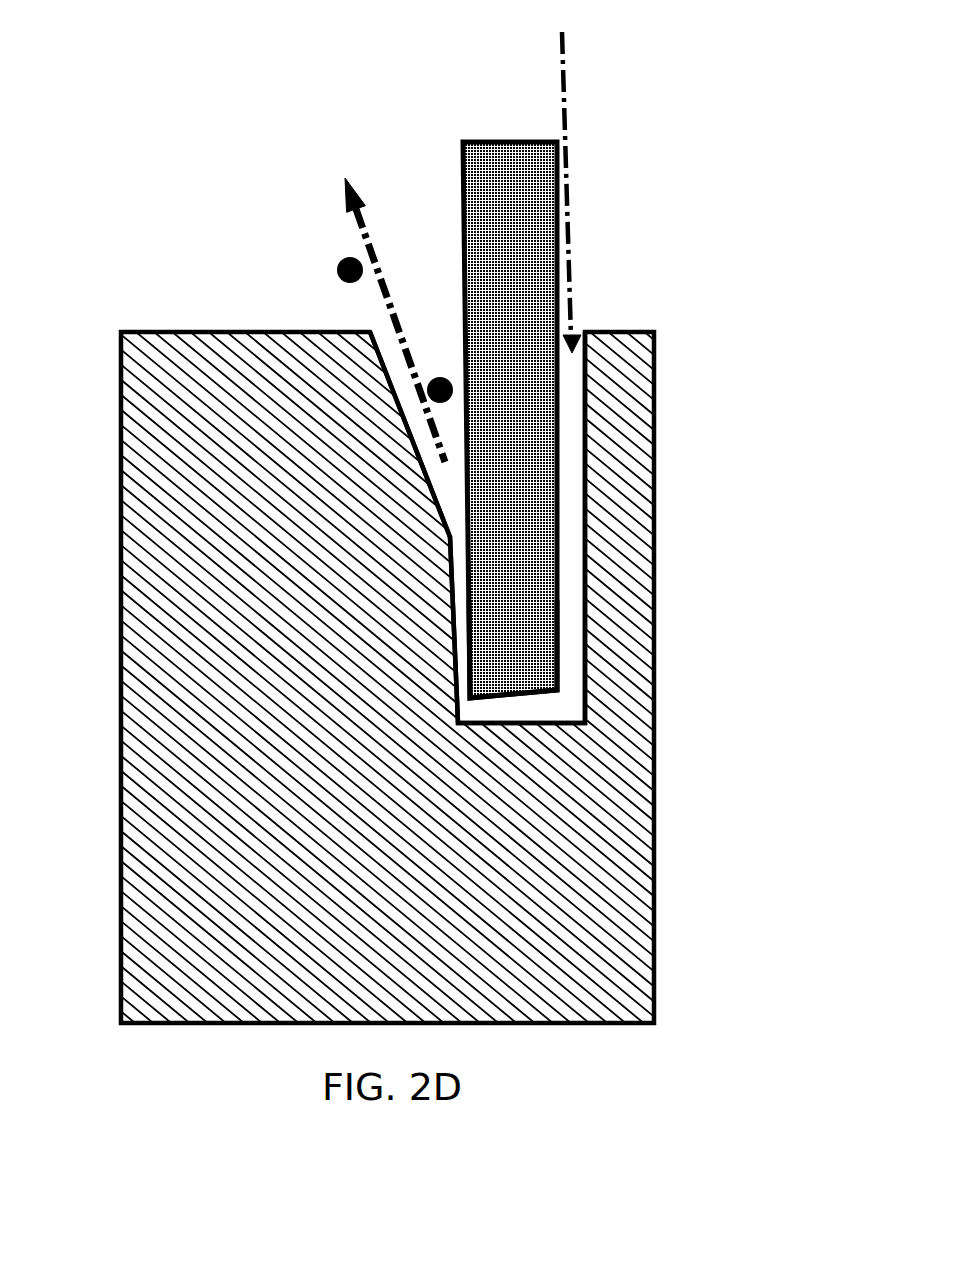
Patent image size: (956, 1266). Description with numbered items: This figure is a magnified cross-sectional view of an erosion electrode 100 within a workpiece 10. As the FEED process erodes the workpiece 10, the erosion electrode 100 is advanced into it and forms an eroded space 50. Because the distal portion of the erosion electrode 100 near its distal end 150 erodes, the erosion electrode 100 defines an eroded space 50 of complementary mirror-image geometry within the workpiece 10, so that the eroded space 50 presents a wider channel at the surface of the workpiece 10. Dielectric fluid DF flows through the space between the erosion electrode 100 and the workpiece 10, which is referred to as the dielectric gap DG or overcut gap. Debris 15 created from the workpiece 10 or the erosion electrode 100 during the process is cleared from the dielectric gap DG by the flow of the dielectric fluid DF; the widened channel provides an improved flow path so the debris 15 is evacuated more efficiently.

The workpiece 10 is at (389, 633).
The eroded space 50 is at (560, 704).
The erosion electrode 100 is at (510, 420).
The distal end 150 is at (513, 649).
The debris 15 is at (338, 272).
The dielectric gap DG is at (406, 394).
The dielectric fluid DF is at (572, 220).